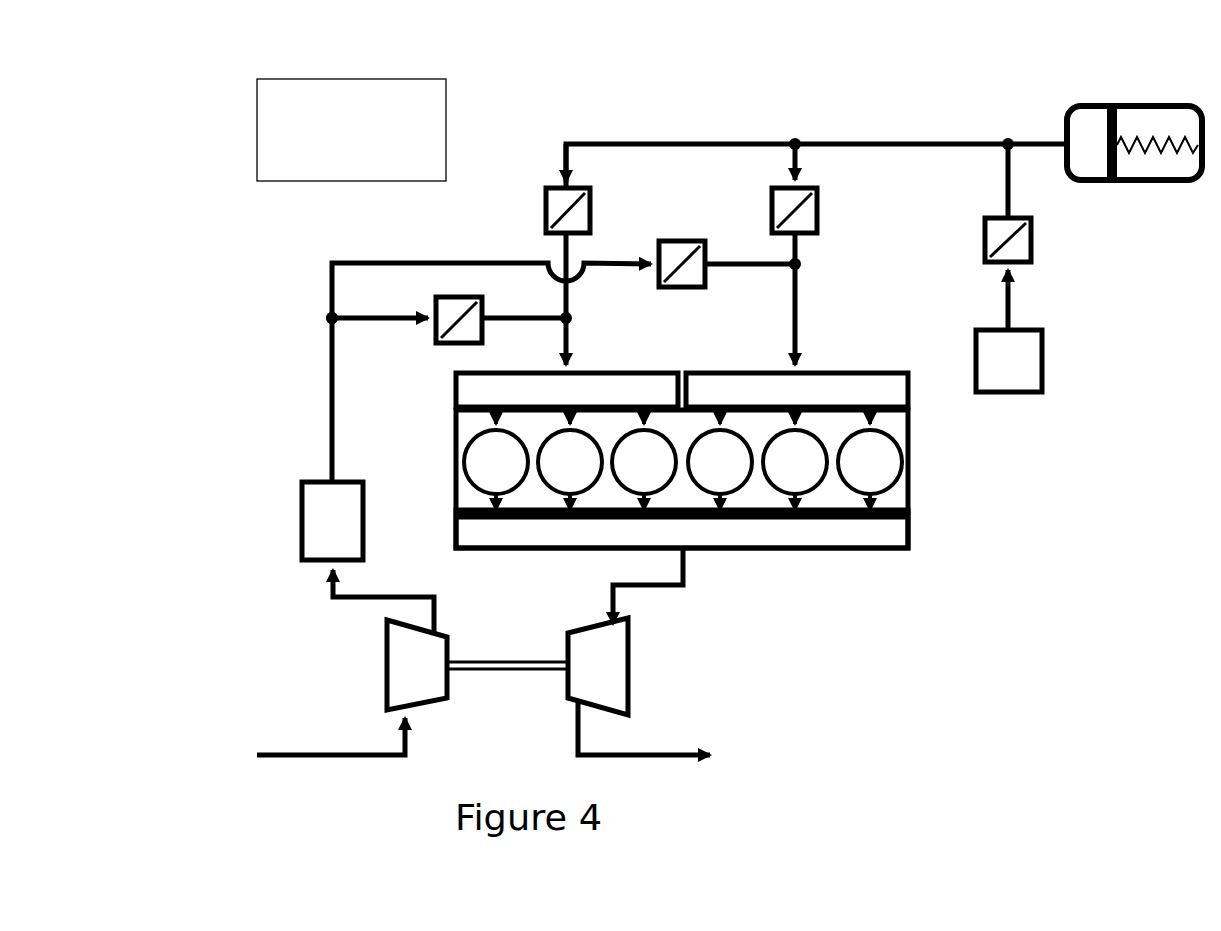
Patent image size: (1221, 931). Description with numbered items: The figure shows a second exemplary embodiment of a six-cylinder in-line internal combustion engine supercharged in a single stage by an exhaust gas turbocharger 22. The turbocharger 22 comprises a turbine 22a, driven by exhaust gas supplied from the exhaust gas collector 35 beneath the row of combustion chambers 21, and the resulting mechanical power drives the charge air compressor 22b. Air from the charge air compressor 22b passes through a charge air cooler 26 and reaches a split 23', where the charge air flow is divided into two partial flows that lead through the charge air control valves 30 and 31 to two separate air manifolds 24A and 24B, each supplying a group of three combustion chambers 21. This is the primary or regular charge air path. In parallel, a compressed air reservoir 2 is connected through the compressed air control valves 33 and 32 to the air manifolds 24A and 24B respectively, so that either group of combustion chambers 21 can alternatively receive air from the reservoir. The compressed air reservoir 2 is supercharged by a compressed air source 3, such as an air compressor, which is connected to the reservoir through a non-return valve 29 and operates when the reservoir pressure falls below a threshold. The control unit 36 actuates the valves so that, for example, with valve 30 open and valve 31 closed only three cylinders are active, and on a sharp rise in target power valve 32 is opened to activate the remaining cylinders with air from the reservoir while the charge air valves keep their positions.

The compressed air reservoir 2 is at (1093, 83).
The compressed air source 3 is at (1050, 376).
The combustion chambers 21 is at (795, 462).
The exhaust gas turbocharger 22 is at (412, 666).
The turbine 22a is at (598, 666).
The charge air compressor 22b is at (417, 665).
The split 23' is at (260, 270).
The air manifold 24A is at (567, 390).
The air manifold 24B is at (797, 390).
The charge air cooler (LLK) 26 is at (293, 525).
The non-return valve 29 is at (1035, 236).
The charge air control valve 30 is at (460, 294).
The charge air control valve 31 is at (698, 290).
The compressed air control valve 32 is at (822, 213).
The compressed air control valve 33 is at (578, 187).
The exhaust gas collector 35 is at (682, 529).
The control unit 36 is at (455, 137).